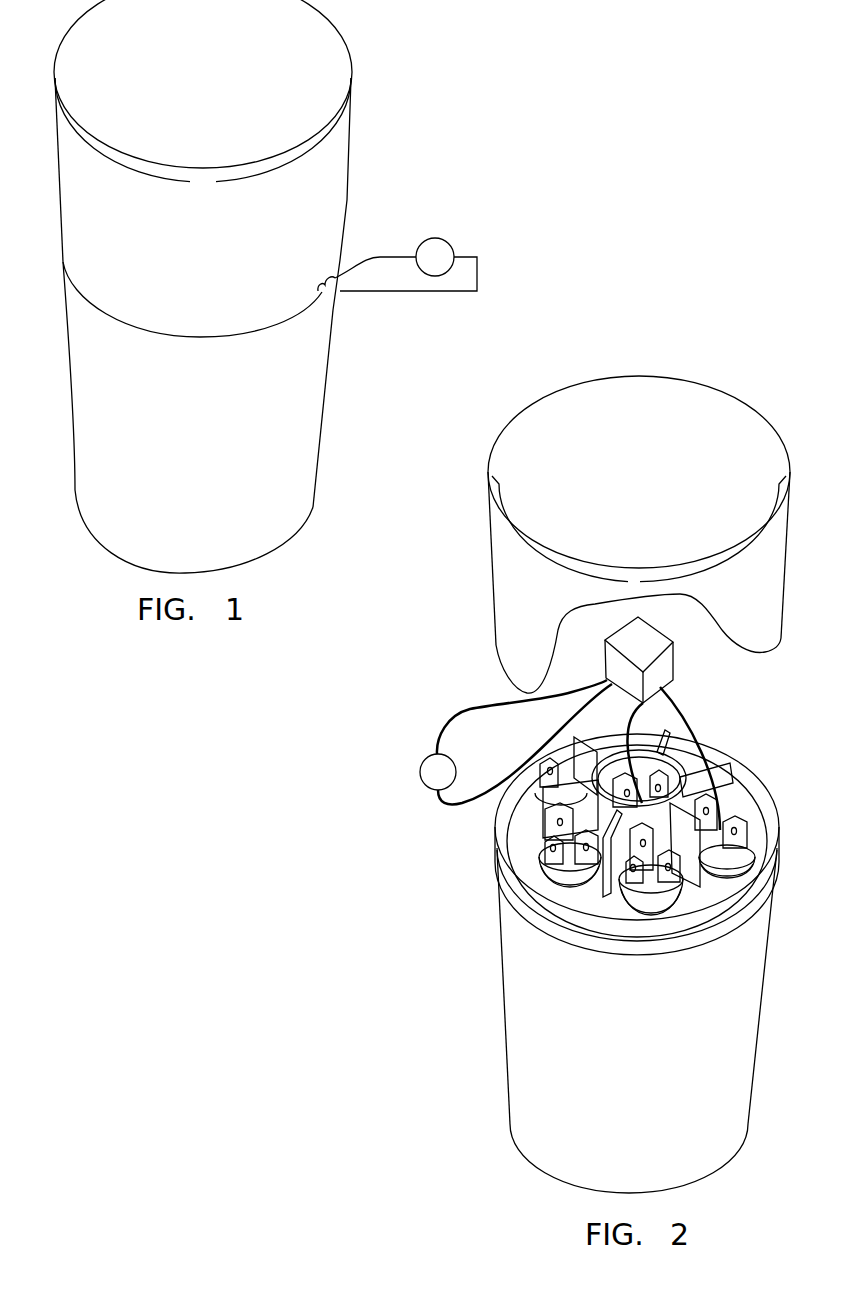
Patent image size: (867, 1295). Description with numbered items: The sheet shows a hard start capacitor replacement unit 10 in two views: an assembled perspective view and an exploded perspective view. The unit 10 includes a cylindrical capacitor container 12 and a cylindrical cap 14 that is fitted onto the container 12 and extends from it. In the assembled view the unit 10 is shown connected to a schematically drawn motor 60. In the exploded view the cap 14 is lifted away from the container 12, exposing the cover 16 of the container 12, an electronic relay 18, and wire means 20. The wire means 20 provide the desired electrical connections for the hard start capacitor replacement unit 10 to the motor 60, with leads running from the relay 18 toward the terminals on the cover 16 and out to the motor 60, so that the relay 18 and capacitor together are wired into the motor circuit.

In FIG. 1, the hard start capacitor replacement unit 10 is at (228, 286).
In FIG. 1, the cylindrical capacitor container 12 is at (293, 433).
In FIG. 2, the cylindrical capacitor container 12 is at (530, 1033).
In FIG. 1, the cylindrical cap 14 is at (325, 168).
In FIG. 2, the cylindrical cap 14 is at (513, 580).
In FIG. 2, the cover 16 is at (747, 789).
In FIG. 2, the electronic relay 18 is at (663, 667).
In FIG. 2, the wire means 20 is at (497, 704).
In FIG. 1, the motor 60 is at (431, 239).
In FIG. 2, the motor 60 is at (420, 766).